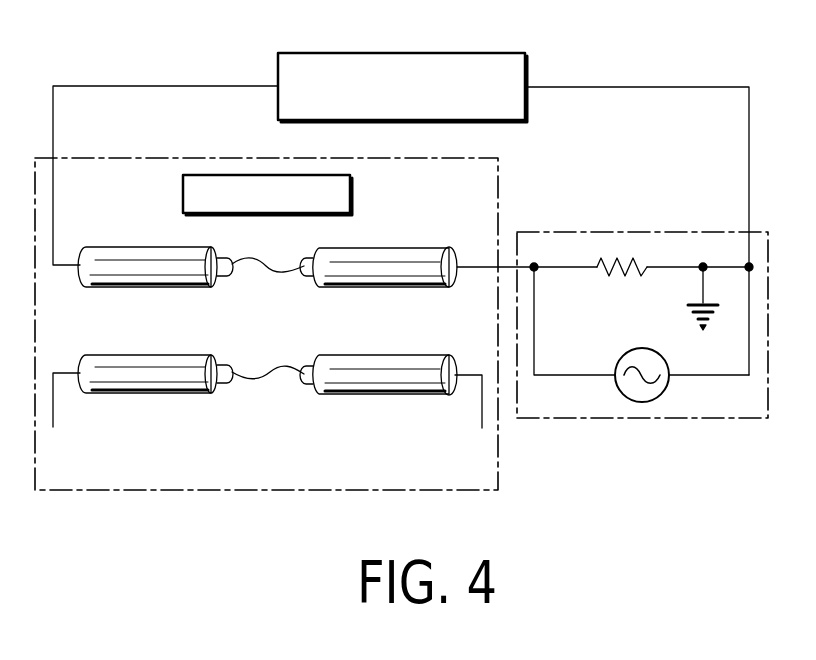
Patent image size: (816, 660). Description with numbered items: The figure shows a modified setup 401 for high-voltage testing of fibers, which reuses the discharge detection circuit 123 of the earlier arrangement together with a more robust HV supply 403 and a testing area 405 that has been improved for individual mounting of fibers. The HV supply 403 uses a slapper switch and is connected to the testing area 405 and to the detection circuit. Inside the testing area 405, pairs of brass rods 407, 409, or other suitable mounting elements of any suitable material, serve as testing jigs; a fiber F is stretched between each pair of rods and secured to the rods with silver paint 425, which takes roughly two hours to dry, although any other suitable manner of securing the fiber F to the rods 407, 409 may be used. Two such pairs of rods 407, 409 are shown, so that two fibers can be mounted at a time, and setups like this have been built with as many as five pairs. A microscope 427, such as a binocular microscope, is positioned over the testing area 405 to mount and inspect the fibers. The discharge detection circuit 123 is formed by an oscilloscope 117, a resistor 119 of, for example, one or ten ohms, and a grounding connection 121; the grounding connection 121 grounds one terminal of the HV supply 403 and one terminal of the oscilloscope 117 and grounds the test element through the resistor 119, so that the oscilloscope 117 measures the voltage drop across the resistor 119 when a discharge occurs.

The modified setup 401 is at (686, 35).
The HV supply 403 is at (525, 118).
The testing area 405 is at (375, 473).
The brass rod 407 is at (105, 247).
The brass rod 409 is at (425, 255).
The silver paint 425 is at (231, 273).
The microscope 427 is at (191, 175).
The fiber F is at (270, 272).
The oscilloscope 117 is at (619, 362).
The resistor 119 is at (636, 260).
The grounding connection 121 is at (690, 308).
The discharge detection circuit 123 is at (642, 361).